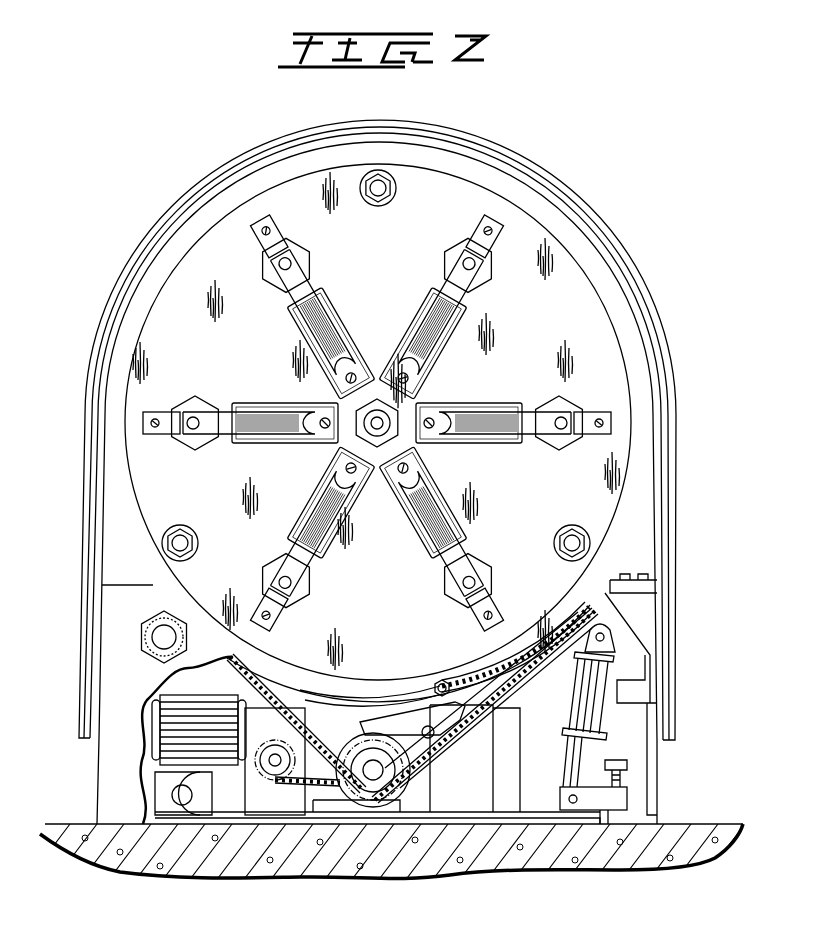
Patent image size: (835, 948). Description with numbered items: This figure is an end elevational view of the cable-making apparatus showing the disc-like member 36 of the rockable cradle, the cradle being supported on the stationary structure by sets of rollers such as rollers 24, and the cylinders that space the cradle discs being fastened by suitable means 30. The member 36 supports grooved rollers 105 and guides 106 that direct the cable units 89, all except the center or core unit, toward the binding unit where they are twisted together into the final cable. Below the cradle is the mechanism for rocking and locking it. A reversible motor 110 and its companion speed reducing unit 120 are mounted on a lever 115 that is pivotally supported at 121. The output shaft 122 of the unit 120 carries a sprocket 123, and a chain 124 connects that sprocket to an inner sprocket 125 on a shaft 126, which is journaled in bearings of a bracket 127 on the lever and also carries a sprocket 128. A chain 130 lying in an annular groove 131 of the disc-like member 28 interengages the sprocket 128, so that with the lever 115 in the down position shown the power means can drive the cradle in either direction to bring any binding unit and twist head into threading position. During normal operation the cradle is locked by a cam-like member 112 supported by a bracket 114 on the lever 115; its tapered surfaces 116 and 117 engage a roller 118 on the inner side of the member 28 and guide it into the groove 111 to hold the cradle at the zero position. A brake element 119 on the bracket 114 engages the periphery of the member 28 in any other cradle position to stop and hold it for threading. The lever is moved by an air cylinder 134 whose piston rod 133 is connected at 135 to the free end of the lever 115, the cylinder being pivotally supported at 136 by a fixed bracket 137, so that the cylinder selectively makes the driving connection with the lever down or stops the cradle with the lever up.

The rollers 24 is at (150, 655).
The disc-like member 28 is at (482, 668).
The securing means 30 is at (376, 200).
The disc-like member 36 is at (462, 188).
The cable units 89 is at (378, 421).
The grooved rollers 105 is at (310, 285).
The guides 106 is at (272, 232).
The reversible motor 110 is at (170, 712).
The groove 111 is at (468, 722).
The cam-like member 112 is at (405, 720).
The bracket 114 is at (497, 760).
The lever 115 is at (525, 812).
The tapered surface 116 is at (410, 690).
The tapered surface 117 is at (488, 690).
The roller 118 is at (443, 678).
The brake element 119 is at (368, 716).
The speed reducing unit 120 is at (250, 792).
The pivot 121 is at (172, 796).
The output shaft 122 is at (275, 770).
The sprocket 123 is at (268, 745).
The chain 124 is at (333, 745).
The inner sprocket 125 is at (428, 768).
The shaft 126 is at (345, 795).
The bracket 127 is at (405, 773).
The sprocket 128 is at (378, 795).
The chain 130 is at (245, 688).
The annular groove 131 is at (510, 660).
The piston rod 133 is at (596, 750).
The air cylinder 134 is at (585, 676).
The connection 135 is at (580, 799).
The pivotal support 136 is at (600, 630).
The fixed bracket 137 is at (640, 650).